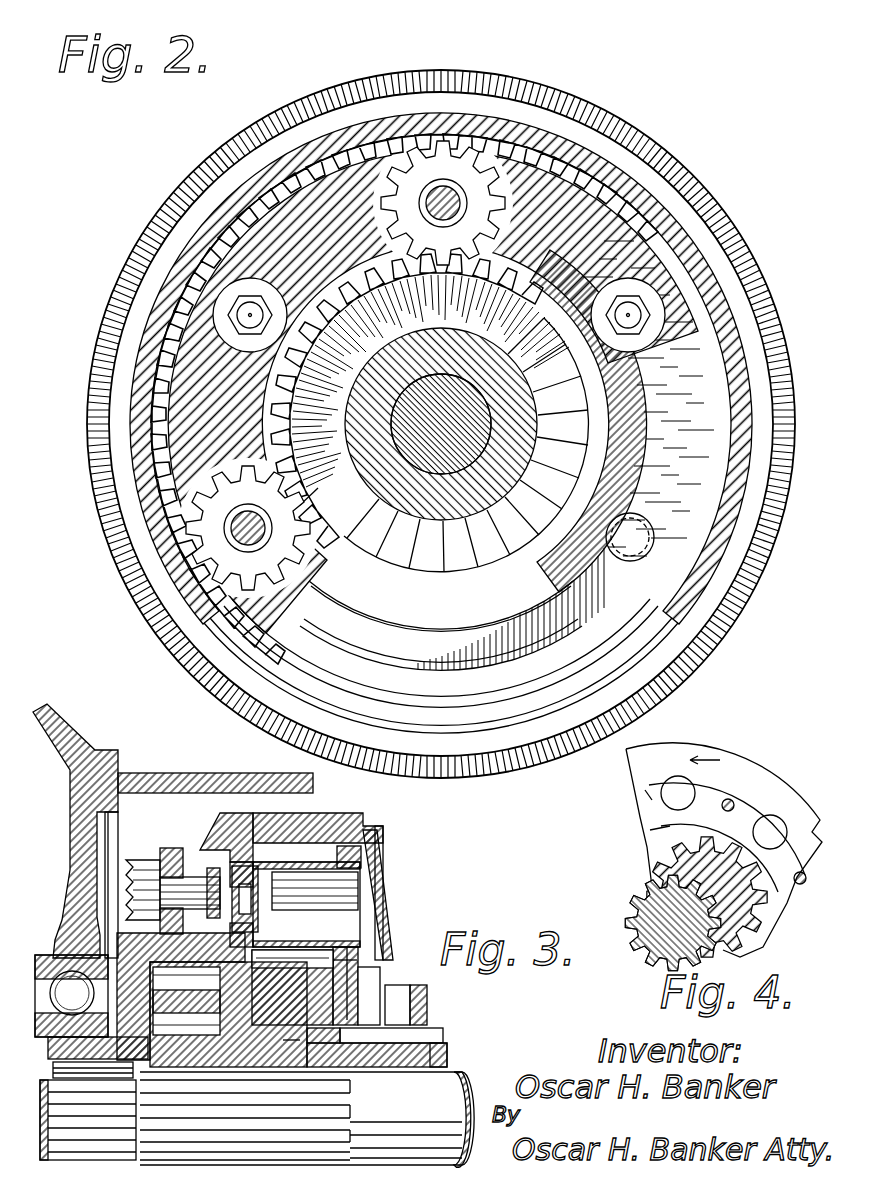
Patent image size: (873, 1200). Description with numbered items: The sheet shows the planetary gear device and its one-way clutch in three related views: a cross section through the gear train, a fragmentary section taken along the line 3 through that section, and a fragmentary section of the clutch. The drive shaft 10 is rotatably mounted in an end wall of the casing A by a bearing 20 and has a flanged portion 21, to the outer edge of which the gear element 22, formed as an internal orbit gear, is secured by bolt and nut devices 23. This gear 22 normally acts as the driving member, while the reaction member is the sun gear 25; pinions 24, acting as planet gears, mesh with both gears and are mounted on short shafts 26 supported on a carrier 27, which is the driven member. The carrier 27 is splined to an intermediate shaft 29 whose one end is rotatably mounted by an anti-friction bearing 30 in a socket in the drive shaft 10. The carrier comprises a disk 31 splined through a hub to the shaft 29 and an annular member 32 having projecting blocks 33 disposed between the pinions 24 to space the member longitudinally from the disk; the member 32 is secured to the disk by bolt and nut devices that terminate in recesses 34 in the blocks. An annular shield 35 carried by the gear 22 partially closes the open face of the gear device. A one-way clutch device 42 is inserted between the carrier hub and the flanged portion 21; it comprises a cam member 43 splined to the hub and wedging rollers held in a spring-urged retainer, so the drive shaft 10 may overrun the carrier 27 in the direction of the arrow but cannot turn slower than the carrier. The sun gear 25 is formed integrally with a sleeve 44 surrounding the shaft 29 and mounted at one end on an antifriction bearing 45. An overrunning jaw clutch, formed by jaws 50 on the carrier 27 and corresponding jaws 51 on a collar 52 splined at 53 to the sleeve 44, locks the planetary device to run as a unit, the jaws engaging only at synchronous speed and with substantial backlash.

In FIG. 2, the section line 3— 3 is at (125, 210).
In FIG. 3, the drive shaft 10 is at (60, 1046).
In FIG. 3, the bearing 20 is at (63, 985).
In FIG. 3, the flanged portion 21 is at (143, 937).
In FIG. 4, the flanged portion 21 is at (740, 768).
In FIG. 2, the gear element 22 is at (187, 583).
In FIG. 3, the gear element 22 is at (288, 846).
In FIG. 3, the bolt and nut devices 23 is at (170, 870).
In FIG. 2, the pinions 24 is at (277, 523).
In FIG. 2, the sun gear 25 is at (290, 452).
In FIG. 3, the sun gear 25 is at (295, 943).
In FIG. 2, the short shafts 26 is at (320, 486).
In FIG. 3, the carrier 27 is at (246, 845).
In FIG. 2, the intermediate shaft 29 is at (441, 424).
In FIG. 3, the intermediate shaft 29 is at (307, 1119).
In FIG. 4, the intermediate shaft 29 is at (647, 903).
In FIG. 3, the anti-friction bearing 30 is at (92, 1068).
In FIG. 3, the disk 31 is at (183, 880).
In FIG. 4, the disk 31 is at (647, 857).
In FIG. 3, the annular member 32 is at (370, 960).
In FIG. 2, the blocks 33 is at (245, 392).
In FIG. 3, the blocks 33 is at (305, 862).
In FIG. 2, the recesses 34 is at (240, 335).
In FIG. 3, the recesses 34 is at (347, 943).
In FIG. 2, the annular shield 35 is at (430, 641).
In FIG. 3, the annular shield 35 is at (387, 872).
In FIG. 3, the one-way clutch device 42 is at (120, 930).
In FIG. 3, the cam member 43 is at (148, 880).
In FIG. 4, the cam member 43 is at (667, 827).
In FIG. 2, the sleeve 44 is at (478, 357).
In FIG. 3, the sleeve 44 is at (415, 1045).
In FIG. 3, the antifriction bearing 45 is at (283, 1040).
In FIG. 2, the jaws 50 is at (582, 422).
In FIG. 3, the jaws 50 is at (372, 975).
In FIG. 3, the jaws 51 is at (400, 990).
In FIG. 3, the collar 52 is at (427, 1003).
In FIG. 3, the spline 53 is at (443, 1032).
In FIG. 2, the direction arrow A is at (745, 634).
In FIG. 3, the direction arrow A is at (178, 760).